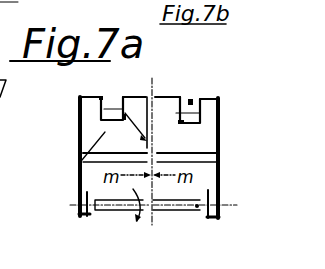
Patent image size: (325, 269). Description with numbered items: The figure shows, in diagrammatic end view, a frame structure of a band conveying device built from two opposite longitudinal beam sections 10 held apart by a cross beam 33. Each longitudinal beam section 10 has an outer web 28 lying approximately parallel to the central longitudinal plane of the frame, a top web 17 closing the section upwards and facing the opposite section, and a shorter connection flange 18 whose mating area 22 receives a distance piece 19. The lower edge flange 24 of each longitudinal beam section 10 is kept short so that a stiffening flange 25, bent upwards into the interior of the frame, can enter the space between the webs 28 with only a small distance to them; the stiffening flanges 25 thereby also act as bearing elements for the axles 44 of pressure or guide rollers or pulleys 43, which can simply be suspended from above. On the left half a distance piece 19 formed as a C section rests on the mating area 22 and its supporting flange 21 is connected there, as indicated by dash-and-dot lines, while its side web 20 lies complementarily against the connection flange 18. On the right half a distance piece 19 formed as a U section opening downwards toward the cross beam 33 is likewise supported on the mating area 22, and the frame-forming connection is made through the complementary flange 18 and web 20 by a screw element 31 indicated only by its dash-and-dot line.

In FIG. 7A, the longitudinal beam section 10 is at (78, 157).
In FIG. 7B, the longitudinal beam section 10 is at (221, 117).
In FIG. 7A, the top web 17 is at (78, 100).
In FIG. 7B, the top web 17 is at (189, 99).
In FIG. 7A, the connection flange 18 is at (99, 113).
In FIG. 7B, the connection flange 18 is at (221, 117).
In FIG. 7A, the distance piece 19 is at (122, 96).
In FIG. 7A, the side web 20 is at (125, 96).
In FIG. 7B, the side web 20 is at (190, 100).
In FIG. 7A, the supporting flange 21 is at (148, 141).
In FIG. 7A, the mating area 22 is at (78, 184).
In FIG. 7B, the mating area 22 is at (181, 124).
In FIG. 7A, the edge flange 24 is at (78, 214).
In FIG. 7B, the edge flange 24 is at (209, 219).
In FIG. 7A, the stiffening flange 25 is at (114, 236).
In FIG. 7B, the stiffening flange 25 is at (197, 206).
In FIG. 7A, the web 28 is at (78, 197).
In FIG. 7B, the web 28 is at (219, 171).
In FIG. 7A, the screw element 31 is at (126, 96).
In FIG. 7B, the cross beam 33 is at (204, 160).
In FIG. 7B, the roller or pulley 43 is at (219, 175).
In FIG. 7B, the axle 44 is at (229, 206).